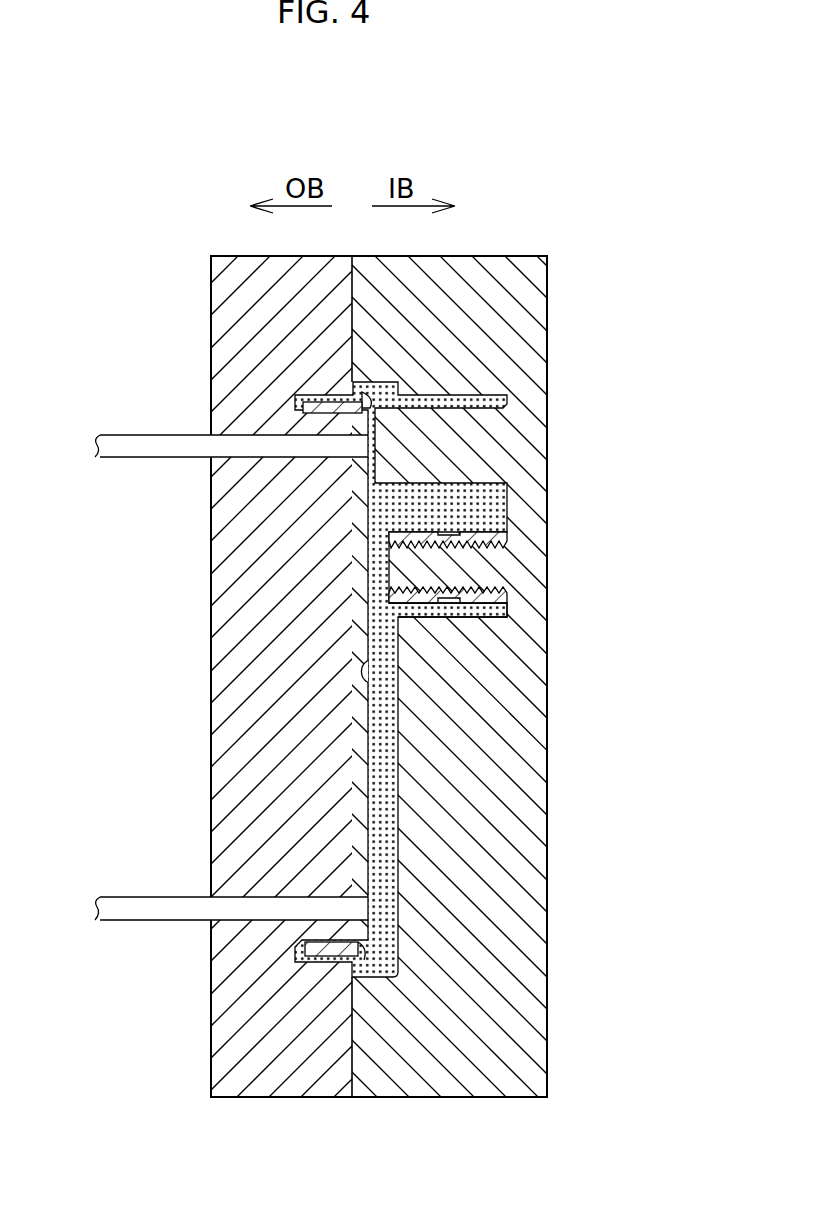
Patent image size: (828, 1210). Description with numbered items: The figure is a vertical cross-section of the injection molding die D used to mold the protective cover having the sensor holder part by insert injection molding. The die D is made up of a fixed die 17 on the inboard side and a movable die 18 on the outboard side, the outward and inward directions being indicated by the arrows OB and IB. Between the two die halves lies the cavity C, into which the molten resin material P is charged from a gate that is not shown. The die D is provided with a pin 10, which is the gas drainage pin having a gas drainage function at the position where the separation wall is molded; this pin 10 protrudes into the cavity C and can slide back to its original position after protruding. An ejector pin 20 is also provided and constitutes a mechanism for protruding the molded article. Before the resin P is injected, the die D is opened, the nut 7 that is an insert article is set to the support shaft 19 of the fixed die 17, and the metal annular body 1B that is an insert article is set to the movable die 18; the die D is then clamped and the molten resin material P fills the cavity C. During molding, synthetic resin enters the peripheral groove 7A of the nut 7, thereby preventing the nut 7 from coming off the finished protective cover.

The injection molding die D is at (528, 225).
The movable die 18 is at (228, 312).
The fixed die 17 is at (532, 298).
The pin 10 is at (130, 450).
The ejector pin 20 is at (132, 913).
The molten resin material P is at (393, 753).
The support shaft 19 is at (468, 548).
The nut 7 is at (445, 600).
The peripheral groove 7A is at (450, 603).
The cavity C is at (366, 688).
The metal annular body 1B is at (322, 952).